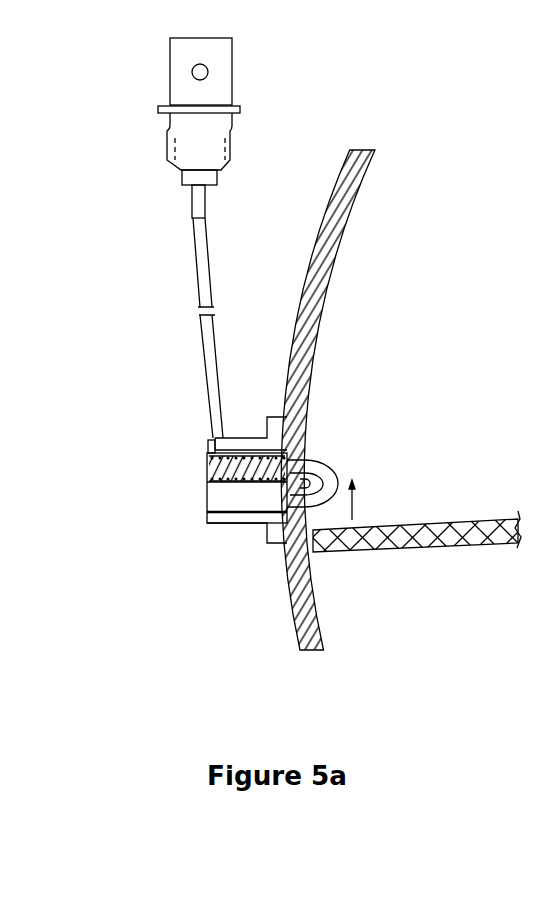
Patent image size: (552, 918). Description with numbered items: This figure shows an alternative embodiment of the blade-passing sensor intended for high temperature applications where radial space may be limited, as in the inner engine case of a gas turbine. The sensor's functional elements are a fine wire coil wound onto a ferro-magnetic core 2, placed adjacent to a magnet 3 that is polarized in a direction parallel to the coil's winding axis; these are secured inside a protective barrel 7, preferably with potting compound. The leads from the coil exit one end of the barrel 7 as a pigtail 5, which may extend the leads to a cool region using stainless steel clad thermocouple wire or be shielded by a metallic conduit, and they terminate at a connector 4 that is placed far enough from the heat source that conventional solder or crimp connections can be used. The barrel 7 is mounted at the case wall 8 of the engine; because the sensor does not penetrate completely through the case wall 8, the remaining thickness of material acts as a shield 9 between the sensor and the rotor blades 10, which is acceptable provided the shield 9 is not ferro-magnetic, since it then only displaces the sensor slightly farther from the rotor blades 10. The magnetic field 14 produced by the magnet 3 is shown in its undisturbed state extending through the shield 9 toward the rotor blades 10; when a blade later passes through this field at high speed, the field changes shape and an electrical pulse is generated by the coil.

The core 2 is at (217, 455).
The magnet 3 is at (205, 499).
The connector 4 is at (245, 102).
The pigtail 5 is at (210, 287).
The barrel 7 is at (247, 437).
The case wall 8 is at (348, 400).
The shield 9 is at (320, 352).
The rotor blades 10 is at (417, 527).
The magnetic field 14 is at (322, 478).